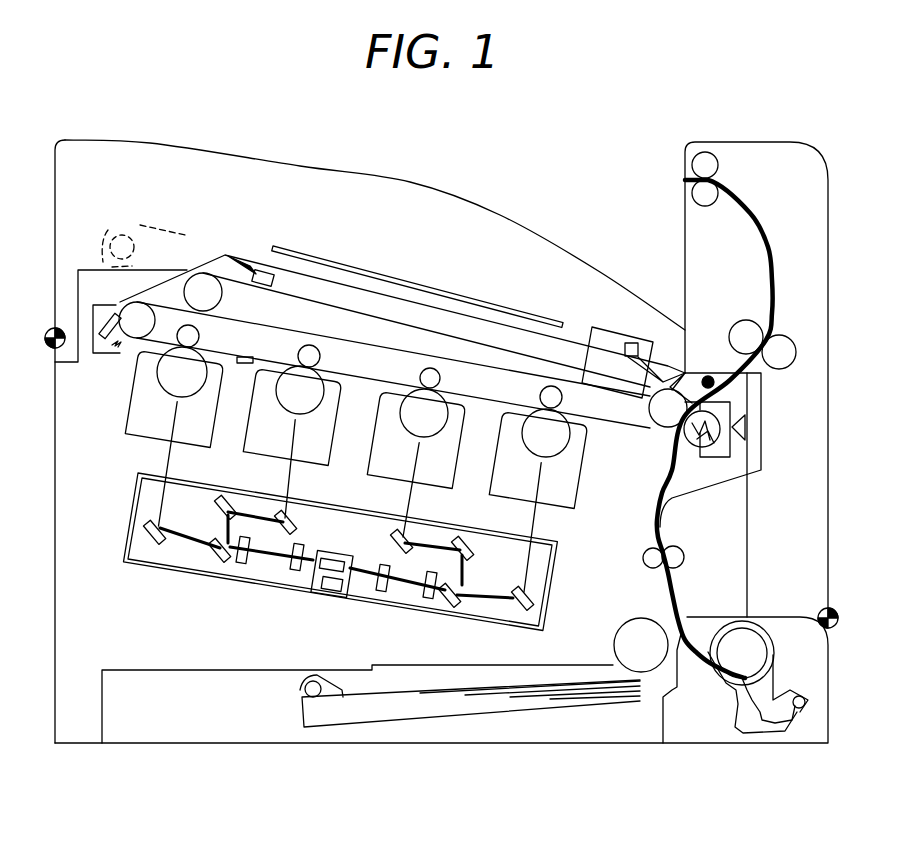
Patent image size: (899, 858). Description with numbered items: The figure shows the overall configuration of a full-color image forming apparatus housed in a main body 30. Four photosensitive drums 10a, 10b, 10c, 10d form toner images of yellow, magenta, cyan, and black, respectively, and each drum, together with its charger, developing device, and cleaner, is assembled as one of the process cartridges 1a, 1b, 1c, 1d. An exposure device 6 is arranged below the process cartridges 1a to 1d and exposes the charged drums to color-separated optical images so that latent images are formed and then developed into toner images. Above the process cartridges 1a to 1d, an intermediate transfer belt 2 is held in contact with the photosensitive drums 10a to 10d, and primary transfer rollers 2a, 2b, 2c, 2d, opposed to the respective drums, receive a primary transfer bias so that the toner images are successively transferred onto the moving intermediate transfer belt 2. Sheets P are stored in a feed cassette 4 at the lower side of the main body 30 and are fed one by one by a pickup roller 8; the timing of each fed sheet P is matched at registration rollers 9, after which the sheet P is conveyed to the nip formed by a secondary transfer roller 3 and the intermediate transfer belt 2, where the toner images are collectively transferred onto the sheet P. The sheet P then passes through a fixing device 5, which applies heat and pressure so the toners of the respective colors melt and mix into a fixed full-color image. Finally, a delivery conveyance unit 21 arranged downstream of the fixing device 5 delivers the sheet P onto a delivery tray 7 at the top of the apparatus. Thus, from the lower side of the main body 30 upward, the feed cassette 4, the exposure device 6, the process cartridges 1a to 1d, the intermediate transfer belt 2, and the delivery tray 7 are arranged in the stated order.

The process cartridge 1a is at (147, 433).
The process cartridge 1b is at (278, 455).
The process cartridge 1c is at (392, 473).
The process cartridge 1d is at (518, 497).
The intermediate transfer belt 2 is at (487, 342).
The primary transfer roller 2a is at (217, 323).
The primary transfer roller 2b is at (327, 340).
The primary transfer roller 2c is at (437, 378).
The primary transfer roller 2d is at (575, 387).
The secondary transfer roller 3 is at (713, 412).
The feed cassette 4 is at (270, 732).
The fixing device 5 is at (780, 330).
The exposure device 6 is at (180, 502).
The delivery tray 7 is at (408, 180).
The pickup roller 8 is at (634, 658).
The registration rollers 9 is at (678, 550).
The photosensitive drum 10a is at (160, 370).
The photosensitive drum 10b is at (308, 357).
The photosensitive drum 10c is at (420, 376).
The photosensitive drum 10d is at (563, 435).
The delivery conveyance unit 21 is at (705, 160).
The main body 30 is at (55, 540).
The sheet P is at (482, 693).